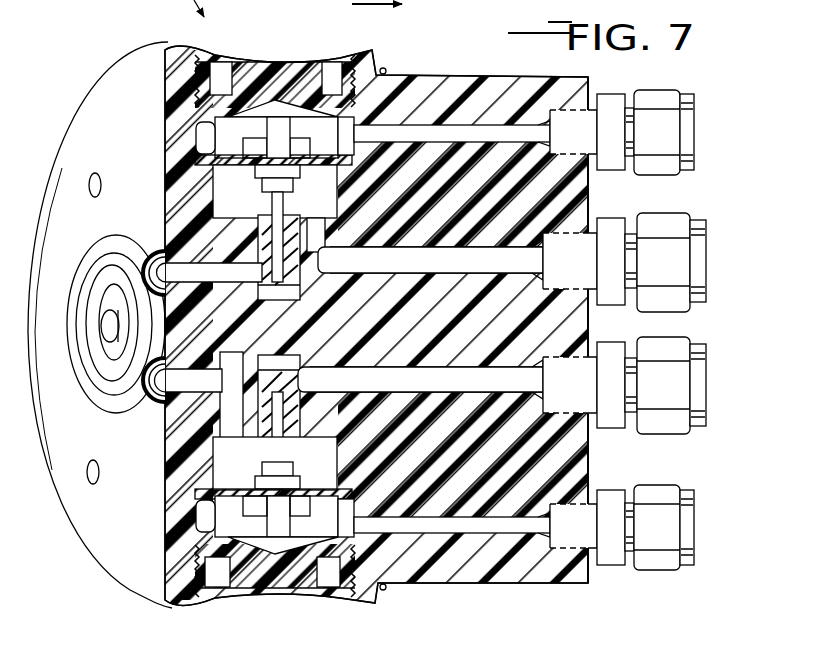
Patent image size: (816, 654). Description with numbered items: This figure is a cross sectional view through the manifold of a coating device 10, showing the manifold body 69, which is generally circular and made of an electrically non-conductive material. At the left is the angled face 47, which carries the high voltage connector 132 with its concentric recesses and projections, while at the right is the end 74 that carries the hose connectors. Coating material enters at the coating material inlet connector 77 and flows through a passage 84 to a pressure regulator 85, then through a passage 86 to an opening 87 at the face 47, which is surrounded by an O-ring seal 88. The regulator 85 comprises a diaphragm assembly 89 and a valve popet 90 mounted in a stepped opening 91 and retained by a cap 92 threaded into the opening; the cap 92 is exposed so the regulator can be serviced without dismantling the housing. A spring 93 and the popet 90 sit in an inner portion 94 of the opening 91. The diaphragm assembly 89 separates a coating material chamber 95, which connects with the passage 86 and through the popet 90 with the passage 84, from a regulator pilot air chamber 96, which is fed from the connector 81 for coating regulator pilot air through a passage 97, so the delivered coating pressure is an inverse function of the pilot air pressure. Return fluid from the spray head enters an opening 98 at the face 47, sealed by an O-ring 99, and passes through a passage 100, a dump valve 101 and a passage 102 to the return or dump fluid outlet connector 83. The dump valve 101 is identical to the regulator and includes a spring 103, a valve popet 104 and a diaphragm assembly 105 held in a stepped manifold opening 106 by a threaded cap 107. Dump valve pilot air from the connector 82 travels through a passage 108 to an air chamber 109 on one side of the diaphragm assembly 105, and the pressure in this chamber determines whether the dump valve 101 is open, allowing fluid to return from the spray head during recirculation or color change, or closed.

The control device 10 is at (399, 7).
The face 47 is at (128, 88).
The body 69 is at (524, 583).
The end 74 is at (590, 212).
The coating material inlet connector 77 is at (706, 417).
The connector for coating regulator pilot air 81 is at (696, 512).
The connector for dump valve pilot air 82 is at (748, 156).
The return or dump fluid outlet connector 83 is at (704, 290).
The passage 84 is at (480, 394).
The pressure regulator 85 is at (322, 454).
The passage 86 is at (186, 378).
The opening 87 is at (148, 410).
The O-ring seal 88 is at (119, 469).
The diaphragm assembly 89 is at (214, 528).
The valve popet 90 is at (268, 442).
The stepped opening 91 is at (330, 585).
The cap 92 is at (220, 607).
The spring 93 is at (298, 362).
The inner portion 94 is at (292, 430).
The coating material chamber 95 is at (340, 484).
The regulator pilot air chamber 96 is at (340, 488).
The passage 97 is at (430, 520).
The opening 98 is at (150, 254).
The O-ring 99 is at (157, 250).
The passage 100 is at (199, 286).
The dump valve 101 is at (318, 198).
The passage 102 is at (466, 262).
The spring 103 is at (296, 294).
The valve popet 104 is at (262, 212).
The diaphragm assembly 105 is at (322, 160).
The stepped manifold opening 106 is at (198, 83).
The threaded cap 107 is at (268, 62).
The passage 108 is at (470, 120).
The air chamber 109 is at (214, 140).
The connector 132 is at (72, 388).